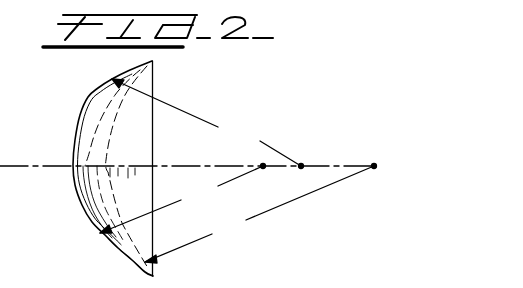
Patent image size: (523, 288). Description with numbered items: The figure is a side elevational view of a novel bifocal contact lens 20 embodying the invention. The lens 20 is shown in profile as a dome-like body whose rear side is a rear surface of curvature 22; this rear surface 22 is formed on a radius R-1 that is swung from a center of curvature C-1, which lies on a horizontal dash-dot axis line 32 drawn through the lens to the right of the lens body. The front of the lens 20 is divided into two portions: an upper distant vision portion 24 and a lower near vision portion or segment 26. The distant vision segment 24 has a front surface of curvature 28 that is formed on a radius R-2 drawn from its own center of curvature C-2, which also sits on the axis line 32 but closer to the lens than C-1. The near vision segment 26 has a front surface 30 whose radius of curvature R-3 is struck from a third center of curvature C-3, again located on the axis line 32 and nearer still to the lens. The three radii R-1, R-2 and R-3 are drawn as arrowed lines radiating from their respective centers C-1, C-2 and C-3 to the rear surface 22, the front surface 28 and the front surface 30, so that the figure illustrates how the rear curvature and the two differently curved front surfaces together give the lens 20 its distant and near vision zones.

The bifocal contact lens 20 is at (91, 94).
The rear surface of curvature 22 is at (108, 143).
The distant vision portion 24 is at (92, 140).
The near vision portion or segment 26 is at (117, 248).
The front surface of curvature 28 is at (79, 122).
The front surface 30 is at (78, 207).
The optical axis 32 is at (50, 166).
The radius R-1 is at (259, 214).
The radius R-2 is at (206, 122).
The radius of curvature R-3 is at (181, 199).
The center of curvature C-1 is at (374, 166).
The center of curvature C-2 is at (301, 165).
The center of curvature C-3 is at (263, 166).